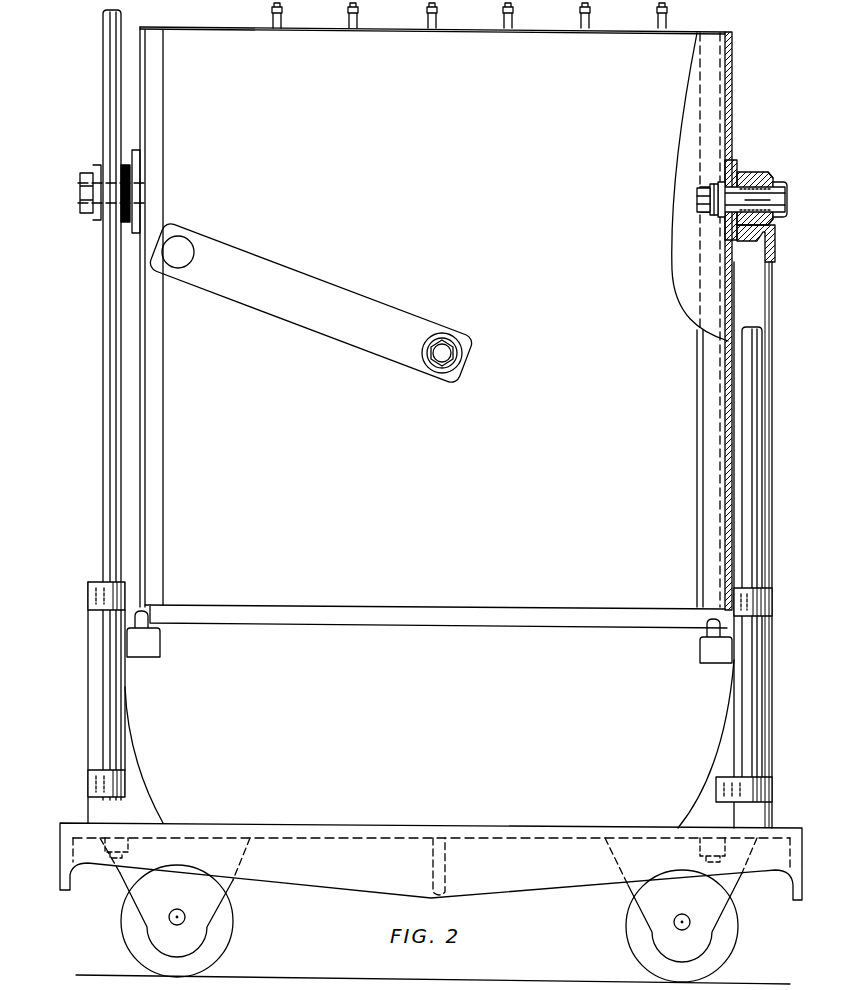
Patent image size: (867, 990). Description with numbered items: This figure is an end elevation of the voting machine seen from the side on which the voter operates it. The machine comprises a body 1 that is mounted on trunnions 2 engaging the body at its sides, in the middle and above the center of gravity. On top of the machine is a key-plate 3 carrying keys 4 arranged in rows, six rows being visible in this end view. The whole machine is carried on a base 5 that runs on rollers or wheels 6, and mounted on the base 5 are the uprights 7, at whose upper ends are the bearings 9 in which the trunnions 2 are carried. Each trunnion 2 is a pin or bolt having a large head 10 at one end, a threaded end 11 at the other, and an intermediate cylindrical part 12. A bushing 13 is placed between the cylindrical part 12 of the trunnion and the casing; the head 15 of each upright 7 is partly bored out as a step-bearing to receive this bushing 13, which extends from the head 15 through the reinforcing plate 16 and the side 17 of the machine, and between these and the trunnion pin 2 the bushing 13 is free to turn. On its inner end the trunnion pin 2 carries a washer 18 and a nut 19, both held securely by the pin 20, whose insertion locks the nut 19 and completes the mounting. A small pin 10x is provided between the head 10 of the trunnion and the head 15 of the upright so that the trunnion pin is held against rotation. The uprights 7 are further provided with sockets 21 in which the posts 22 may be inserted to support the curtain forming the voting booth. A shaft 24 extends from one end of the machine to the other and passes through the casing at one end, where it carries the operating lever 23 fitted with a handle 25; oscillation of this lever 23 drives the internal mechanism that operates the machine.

The body 1 is at (716, 124).
The trunnion 2 is at (786, 199).
The key-plate 3 is at (730, 38).
The keys 4 is at (275, 16).
The base 5 is at (438, 827).
The wheels 6 is at (231, 943).
The uprights 7 is at (124, 719).
The bearings 9 is at (776, 220).
The head of trunnion 10 is at (784, 181).
The small pin 10x is at (772, 175).
The threaded end 11 is at (697, 199).
The cylindrical part 12 is at (763, 177).
The bushing 13 is at (743, 186).
The head of upright 15 is at (752, 186).
The reinforcing plate 16 is at (733, 162).
The side of machine 17 is at (731, 88).
The washer 18 is at (718, 188).
The nut 19 is at (716, 220).
The pin 20 is at (710, 217).
The sockets 21 is at (92, 589).
The posts 22 is at (108, 375).
The operating lever 23 is at (307, 283).
The shaft 24 is at (447, 353).
The handle 25 is at (182, 250).